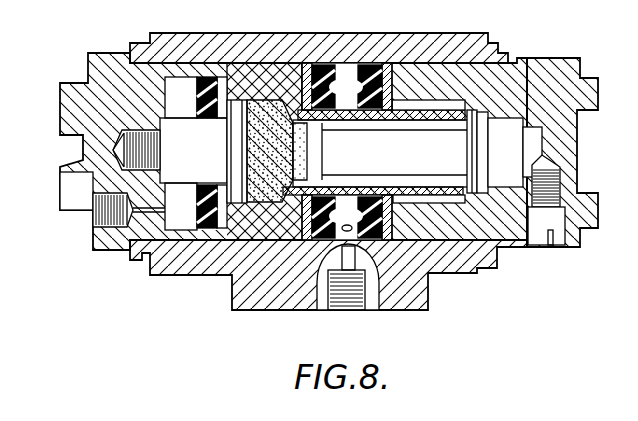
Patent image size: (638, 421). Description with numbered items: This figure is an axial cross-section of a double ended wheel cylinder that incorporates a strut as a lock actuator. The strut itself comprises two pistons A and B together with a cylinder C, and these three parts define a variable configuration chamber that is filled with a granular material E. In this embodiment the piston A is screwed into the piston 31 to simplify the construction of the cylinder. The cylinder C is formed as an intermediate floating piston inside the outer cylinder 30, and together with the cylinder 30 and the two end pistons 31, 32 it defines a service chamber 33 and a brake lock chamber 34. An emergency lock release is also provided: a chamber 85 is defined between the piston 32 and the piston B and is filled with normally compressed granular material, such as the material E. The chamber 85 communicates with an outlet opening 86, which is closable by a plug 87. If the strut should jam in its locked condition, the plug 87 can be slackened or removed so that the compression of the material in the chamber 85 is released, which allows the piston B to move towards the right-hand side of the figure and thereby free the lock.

The cylinder 30 is at (299, 50).
The piston 31 is at (105, 163).
The piston 32 is at (532, 88).
The service chamber 33 is at (347, 80).
The brake lock chamber 34 is at (183, 88).
The chamber 85 is at (533, 137).
The outlet opening 86 is at (533, 187).
The plug 87 is at (567, 222).
The piston A is at (208, 168).
The piston B is at (315, 165).
The cylinder C is at (268, 78).
The material E is at (277, 137).